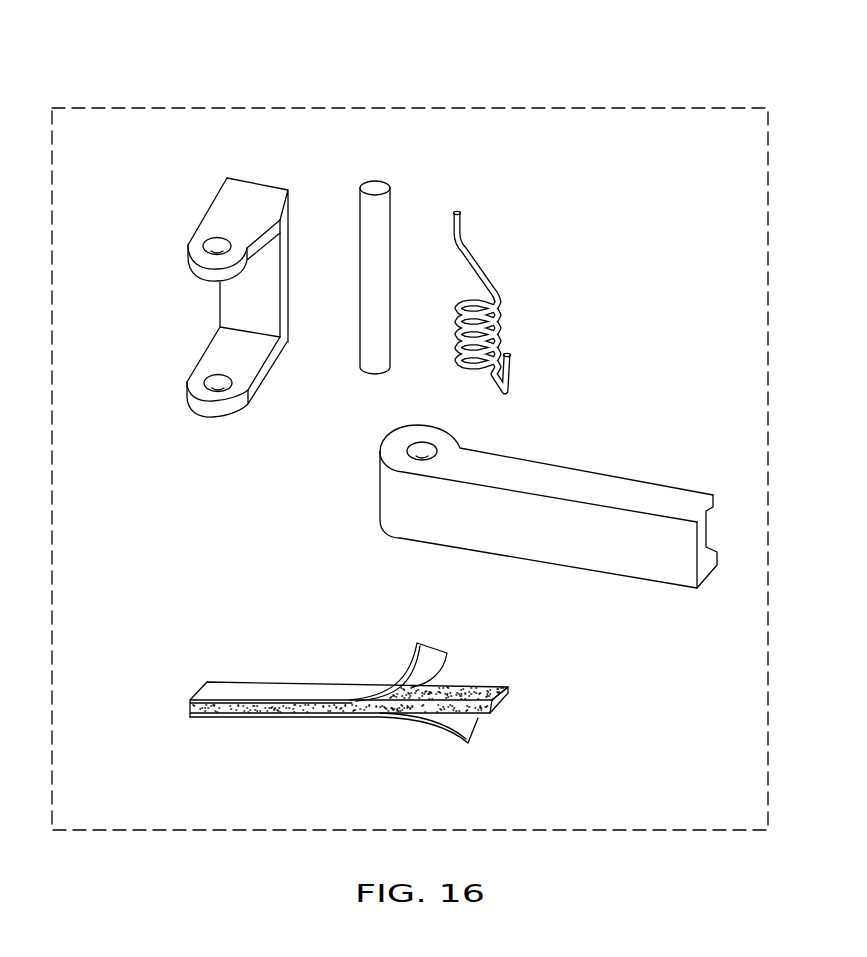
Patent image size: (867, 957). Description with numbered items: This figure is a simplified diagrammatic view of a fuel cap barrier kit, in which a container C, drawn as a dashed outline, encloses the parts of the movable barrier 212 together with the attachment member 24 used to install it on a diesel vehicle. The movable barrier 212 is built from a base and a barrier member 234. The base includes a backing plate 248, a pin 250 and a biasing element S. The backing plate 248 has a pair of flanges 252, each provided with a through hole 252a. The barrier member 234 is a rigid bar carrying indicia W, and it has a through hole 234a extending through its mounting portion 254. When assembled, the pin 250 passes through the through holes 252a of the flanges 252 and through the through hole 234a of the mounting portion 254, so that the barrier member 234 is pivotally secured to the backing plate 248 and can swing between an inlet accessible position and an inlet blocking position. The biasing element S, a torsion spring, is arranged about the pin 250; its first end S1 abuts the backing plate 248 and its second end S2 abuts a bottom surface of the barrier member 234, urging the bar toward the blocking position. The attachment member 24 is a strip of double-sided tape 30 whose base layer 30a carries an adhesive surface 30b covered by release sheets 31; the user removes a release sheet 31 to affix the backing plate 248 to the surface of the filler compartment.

The container C is at (142, 108).
The movable barrier 212 is at (410, 434).
The backing plate 248 is at (223, 295).
The flanges 252 is at (212, 203).
The through hole 252a is at (205, 244).
The pin 250 is at (391, 215).
The biasing element S is at (517, 298).
The first end S1 is at (461, 226).
The second end S2 is at (511, 362).
The barrier member 234 is at (511, 520).
The through hole 234a is at (408, 447).
The mounting portion 254 is at (448, 440).
The indicia W is at (569, 557).
The attachment member 24 is at (355, 691).
The double-sided tape 30 is at (381, 699).
The base layer 30a is at (505, 700).
The adhesive surface 30b is at (465, 695).
The release sheets 31 is at (433, 646).